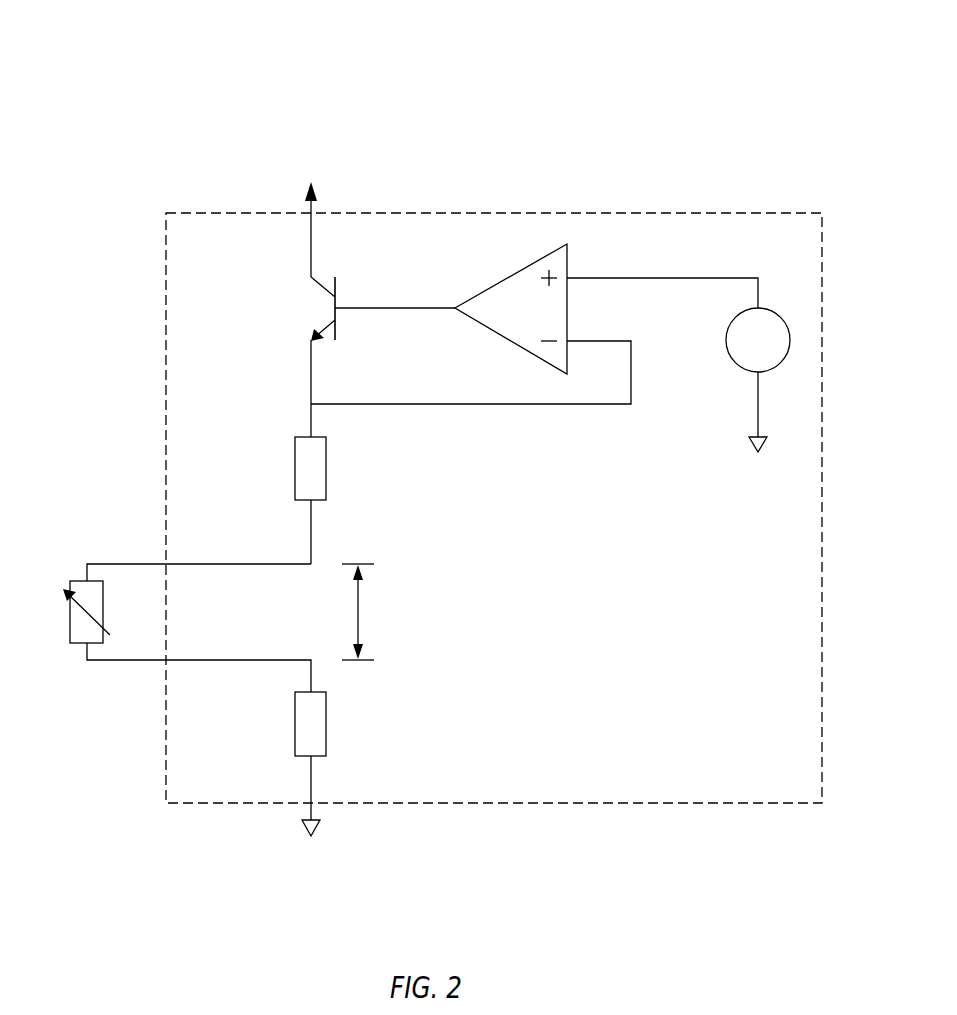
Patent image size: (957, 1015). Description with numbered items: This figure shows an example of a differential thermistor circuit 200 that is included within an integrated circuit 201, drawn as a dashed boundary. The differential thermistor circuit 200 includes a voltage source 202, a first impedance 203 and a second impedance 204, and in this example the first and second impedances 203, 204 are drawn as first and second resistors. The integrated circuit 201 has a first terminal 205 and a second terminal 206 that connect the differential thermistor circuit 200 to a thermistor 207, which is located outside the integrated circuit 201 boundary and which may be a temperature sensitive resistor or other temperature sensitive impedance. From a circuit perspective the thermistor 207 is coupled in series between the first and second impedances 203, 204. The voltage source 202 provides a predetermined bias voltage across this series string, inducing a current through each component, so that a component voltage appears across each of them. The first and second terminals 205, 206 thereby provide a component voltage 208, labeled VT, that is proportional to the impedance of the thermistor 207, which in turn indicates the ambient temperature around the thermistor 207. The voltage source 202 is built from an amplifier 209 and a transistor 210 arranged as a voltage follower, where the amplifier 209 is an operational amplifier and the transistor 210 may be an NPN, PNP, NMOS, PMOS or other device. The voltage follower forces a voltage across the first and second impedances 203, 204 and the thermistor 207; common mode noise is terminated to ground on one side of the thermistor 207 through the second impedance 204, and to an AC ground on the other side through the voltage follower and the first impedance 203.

The differential thermistor circuit 200 is at (399, 47).
The integrated circuit 201 is at (669, 213).
The voltage source 202 is at (592, 495).
The first impedance 203 is at (327, 485).
The second impedance 204 is at (327, 708).
The first terminal 205 is at (136, 537).
The second terminal 206 is at (134, 686).
The thermistor 207 is at (70, 640).
The component voltage (VT) 208 is at (405, 606).
The amplifier 209 is at (515, 272).
The transistor 210 is at (338, 329).